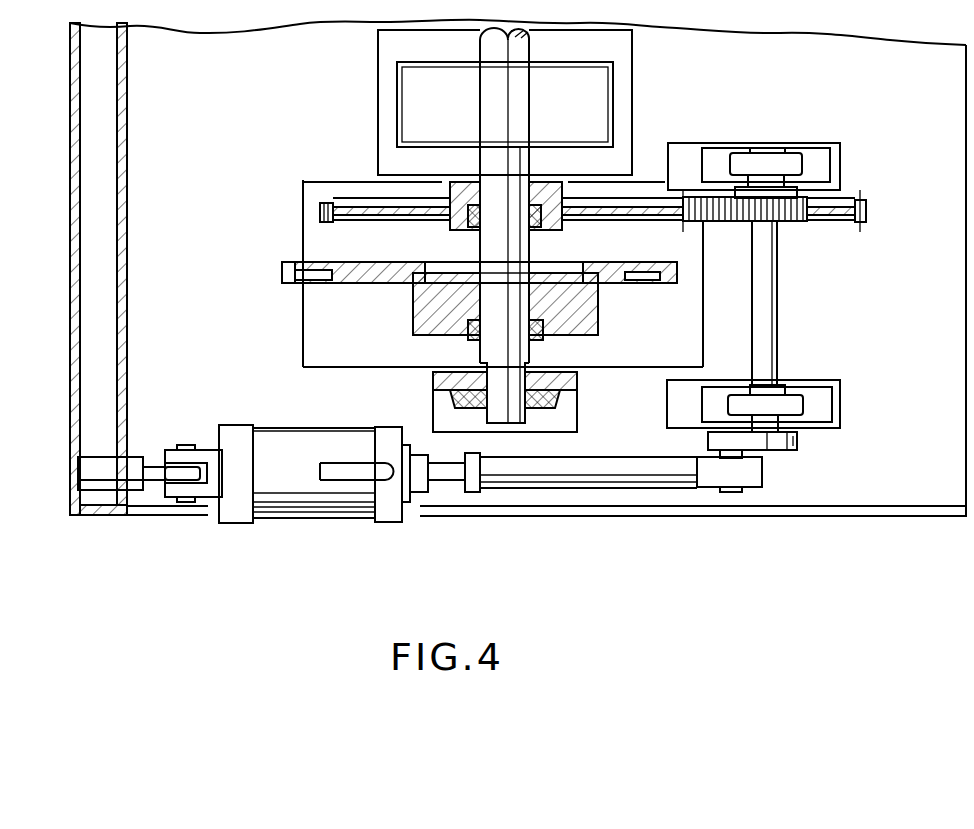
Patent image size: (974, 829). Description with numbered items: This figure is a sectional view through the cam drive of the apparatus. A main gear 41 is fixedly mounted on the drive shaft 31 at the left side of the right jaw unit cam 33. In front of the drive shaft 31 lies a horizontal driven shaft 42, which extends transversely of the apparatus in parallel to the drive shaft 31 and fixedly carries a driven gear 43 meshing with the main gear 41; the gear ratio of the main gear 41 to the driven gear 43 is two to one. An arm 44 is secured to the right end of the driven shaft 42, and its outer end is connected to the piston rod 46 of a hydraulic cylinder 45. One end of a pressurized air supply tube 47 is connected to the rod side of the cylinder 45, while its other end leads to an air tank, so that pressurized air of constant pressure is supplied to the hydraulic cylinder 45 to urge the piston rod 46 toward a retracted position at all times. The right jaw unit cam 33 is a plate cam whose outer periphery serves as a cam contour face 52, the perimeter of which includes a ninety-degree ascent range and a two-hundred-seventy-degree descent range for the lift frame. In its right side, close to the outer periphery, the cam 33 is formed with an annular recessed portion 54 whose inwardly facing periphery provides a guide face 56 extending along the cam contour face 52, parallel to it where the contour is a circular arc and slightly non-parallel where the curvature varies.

The drive shaft 31 is at (498, 420).
The right jaw unit cam 33 is at (297, 257).
The main gear 41 is at (320, 203).
The driven shaft 42 is at (778, 313).
The driven gear 43 is at (868, 210).
The arm 44 is at (762, 443).
The hydraulic cylinder 45 is at (305, 508).
The piston rod 46 is at (618, 483).
The pressurized air supply tube 47 is at (345, 476).
The cam contour face 52 is at (282, 274).
The annular recessed portion 54 is at (318, 284).
The guide face 56 is at (306, 290).